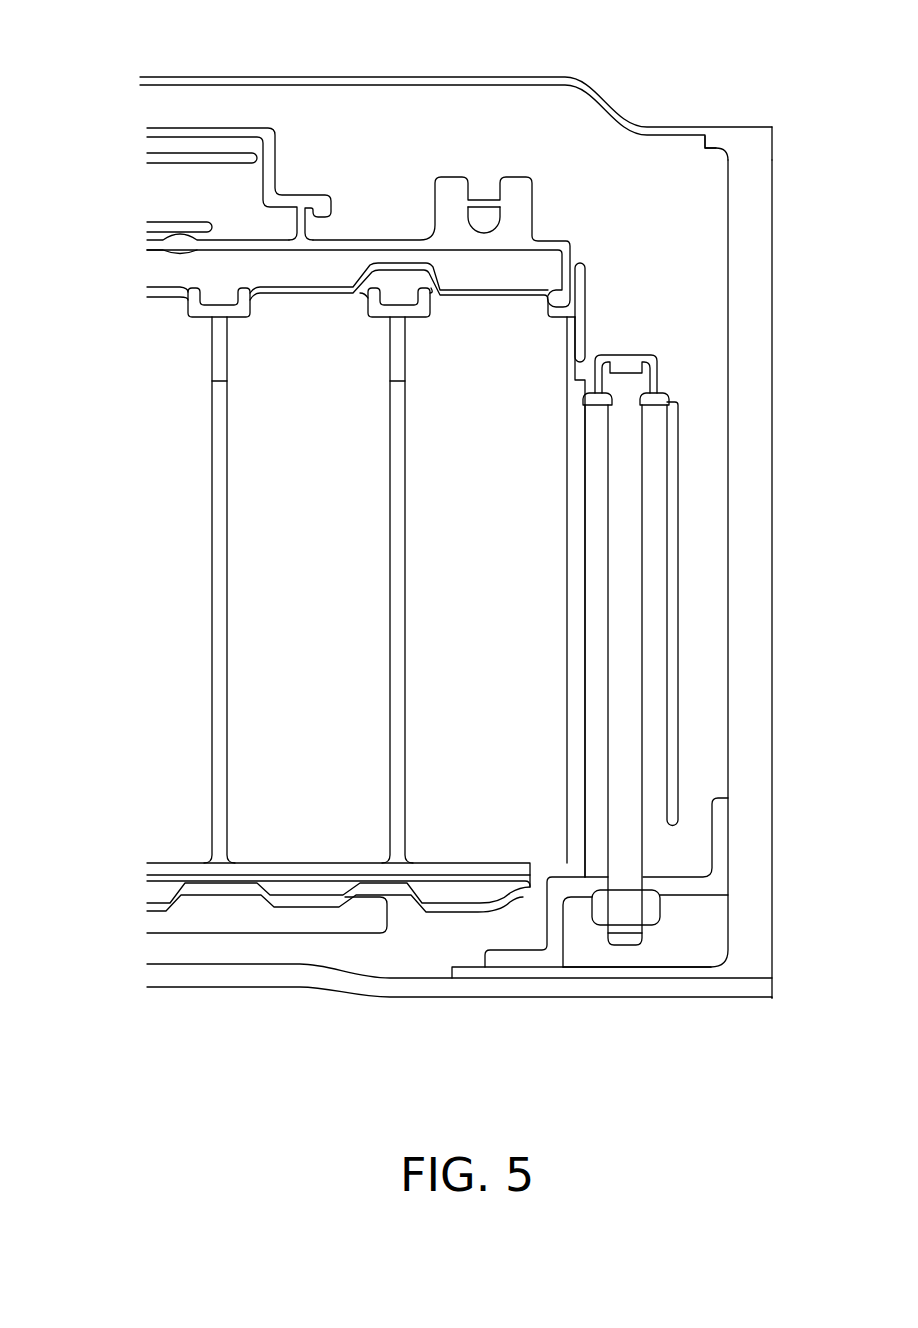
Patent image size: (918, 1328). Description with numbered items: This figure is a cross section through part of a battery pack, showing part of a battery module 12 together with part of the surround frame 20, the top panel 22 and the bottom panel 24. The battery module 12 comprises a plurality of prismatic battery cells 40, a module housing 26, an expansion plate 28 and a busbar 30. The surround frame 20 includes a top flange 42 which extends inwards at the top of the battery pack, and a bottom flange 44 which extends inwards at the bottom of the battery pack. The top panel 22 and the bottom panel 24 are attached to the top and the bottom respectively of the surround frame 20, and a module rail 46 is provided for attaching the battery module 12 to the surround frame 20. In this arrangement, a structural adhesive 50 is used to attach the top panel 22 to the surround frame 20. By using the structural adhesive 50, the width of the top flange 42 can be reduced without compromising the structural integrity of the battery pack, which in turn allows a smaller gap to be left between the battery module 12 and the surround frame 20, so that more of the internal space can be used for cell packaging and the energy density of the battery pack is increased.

The battery module 12 is at (108, 551).
The surround frame 20 is at (773, 527).
The top panel 22 is at (406, 77).
The bottom panel 24 is at (388, 988).
The module housing 26 is at (586, 300).
The expansion plate 28 is at (672, 477).
The busbar 30 is at (372, 240).
The prismatic battery cells 40 is at (324, 559).
The top flange 42 is at (710, 150).
The bottom flange 44 is at (621, 970).
The module rail 46 is at (720, 840).
The structural adhesive 50 is at (774, 134).